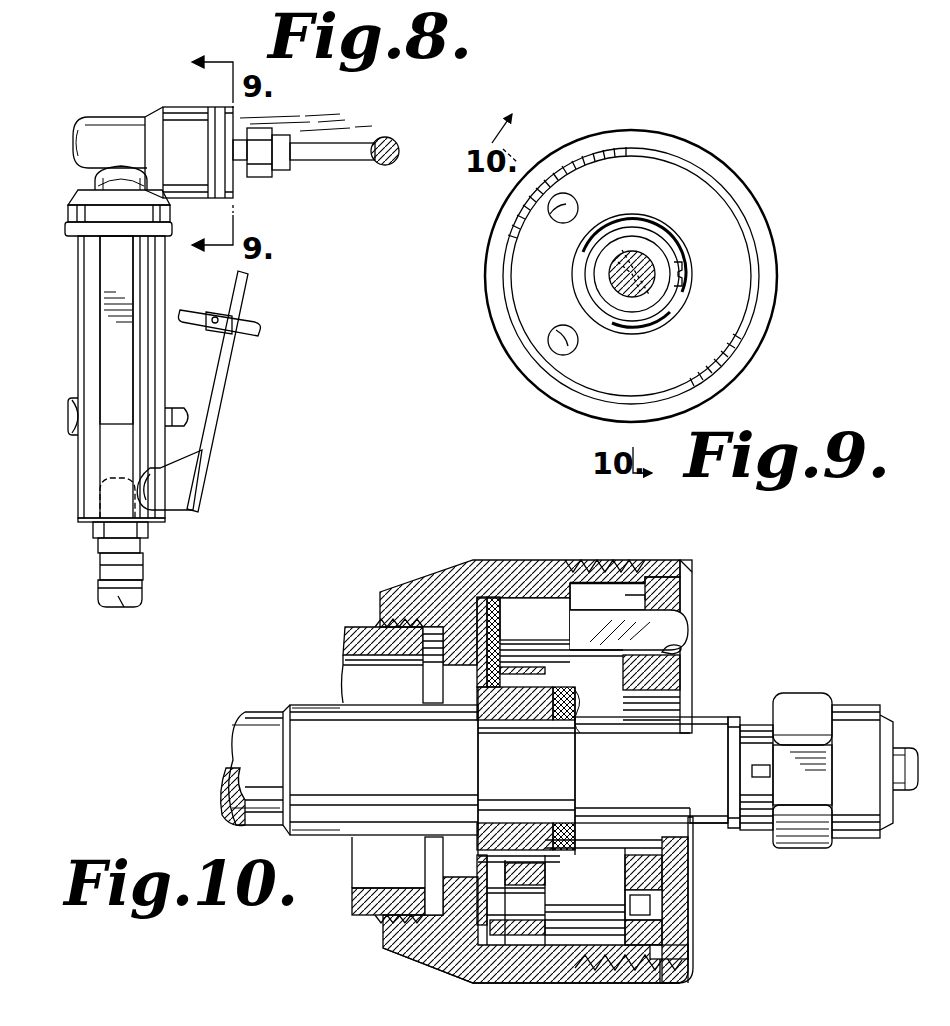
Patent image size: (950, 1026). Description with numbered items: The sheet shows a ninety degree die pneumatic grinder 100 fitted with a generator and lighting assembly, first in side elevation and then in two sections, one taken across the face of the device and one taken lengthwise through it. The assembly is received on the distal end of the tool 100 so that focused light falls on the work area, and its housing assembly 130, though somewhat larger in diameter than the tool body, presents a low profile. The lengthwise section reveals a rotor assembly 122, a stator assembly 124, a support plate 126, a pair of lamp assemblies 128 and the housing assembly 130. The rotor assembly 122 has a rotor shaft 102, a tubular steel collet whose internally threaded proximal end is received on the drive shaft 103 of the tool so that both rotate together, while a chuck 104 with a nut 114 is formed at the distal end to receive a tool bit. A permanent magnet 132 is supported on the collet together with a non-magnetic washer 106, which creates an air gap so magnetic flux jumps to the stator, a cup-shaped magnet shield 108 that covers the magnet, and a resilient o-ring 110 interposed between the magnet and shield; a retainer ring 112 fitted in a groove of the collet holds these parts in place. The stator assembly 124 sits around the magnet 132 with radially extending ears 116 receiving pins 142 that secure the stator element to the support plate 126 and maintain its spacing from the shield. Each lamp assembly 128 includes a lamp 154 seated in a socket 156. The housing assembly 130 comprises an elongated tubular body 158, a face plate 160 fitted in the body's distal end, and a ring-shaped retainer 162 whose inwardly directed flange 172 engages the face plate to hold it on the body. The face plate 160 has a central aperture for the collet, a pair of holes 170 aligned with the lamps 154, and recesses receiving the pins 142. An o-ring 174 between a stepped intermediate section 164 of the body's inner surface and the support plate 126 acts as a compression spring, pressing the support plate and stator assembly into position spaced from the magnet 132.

In FIG. 8, the 90 degree die pneumatic grinder 100 is at (78, 364).
In FIG. 9, the rotor shaft 102 is at (650, 256).
In FIG. 10, the rotor shaft 102 is at (332, 828).
In FIG. 10, the drive shaft 103 is at (245, 710).
In FIG. 10, the chuck 104 is at (844, 706).
In FIG. 10, the washer 106 is at (478, 736).
In FIG. 9, the magnet shield 108 is at (680, 305).
In FIG. 10, the magnet shield 108 is at (478, 862).
In FIG. 10, the o-ring 110 is at (565, 705).
In FIG. 9, the retainer ring 112 is at (648, 292).
In FIG. 10, the retainer ring 112 is at (585, 718).
In FIG. 10, the nut 114 is at (808, 832).
In FIG. 10, the ears 116 is at (533, 950).
In FIG. 10, the rotor assembly 122 is at (306, 702).
In FIG. 10, the stator assembly 124 is at (506, 947).
In FIG. 10, the support plate 126 is at (482, 597).
In FIG. 10, the lamp assemblies 128 is at (598, 600).
In FIG. 8, the housing assembly 130 is at (182, 104).
In FIG. 10, the housing assembly 130 is at (385, 588).
In FIG. 10, the permanent magnet 132 is at (516, 805).
In FIG. 10, the pins 142 is at (672, 893).
In FIG. 9, the lamp 154 is at (575, 200).
In FIG. 10, the lamp 154 is at (810, 672).
In FIG. 10, the socket 156 is at (533, 598).
In FIG. 10, the tubular body 158 is at (440, 962).
In FIG. 9, the face plate 160 is at (664, 166).
In FIG. 10, the face plate 160 is at (664, 932).
In FIG. 9, the retainer 162 is at (495, 283).
In FIG. 10, the retainer 162 is at (681, 557).
In FIG. 10, the intermediate section 164 is at (432, 650).
In FIG. 9, the holes 170 is at (556, 218).
In FIG. 10, the holes 170 is at (675, 652).
In FIG. 10, the flange 172 is at (690, 574).
In FIG. 10, the o-ring 174 is at (490, 612).